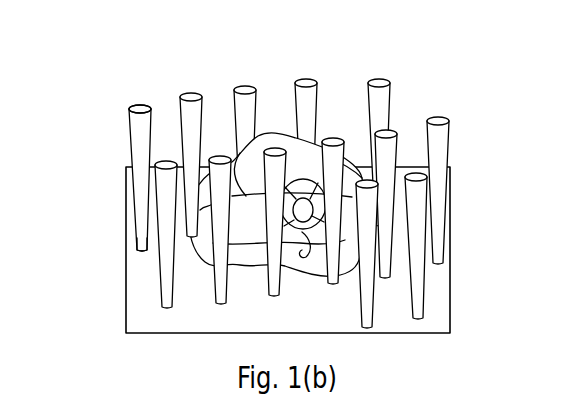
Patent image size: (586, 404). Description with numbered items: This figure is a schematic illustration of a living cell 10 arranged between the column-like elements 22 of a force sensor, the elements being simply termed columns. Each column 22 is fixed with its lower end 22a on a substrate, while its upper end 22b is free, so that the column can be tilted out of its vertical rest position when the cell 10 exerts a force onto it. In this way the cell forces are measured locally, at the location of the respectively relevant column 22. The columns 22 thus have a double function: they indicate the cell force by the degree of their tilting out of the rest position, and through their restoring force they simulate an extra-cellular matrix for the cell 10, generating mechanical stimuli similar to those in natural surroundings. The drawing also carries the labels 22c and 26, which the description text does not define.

The cell 10 is at (346, 90).
The column-like elements 22 is at (280, 173).
The lower end 22a is at (137, 238).
The upper end 22b is at (128, 115).
The pin tip 22c is at (140, 105).
The base plate 26 is at (390, 318).